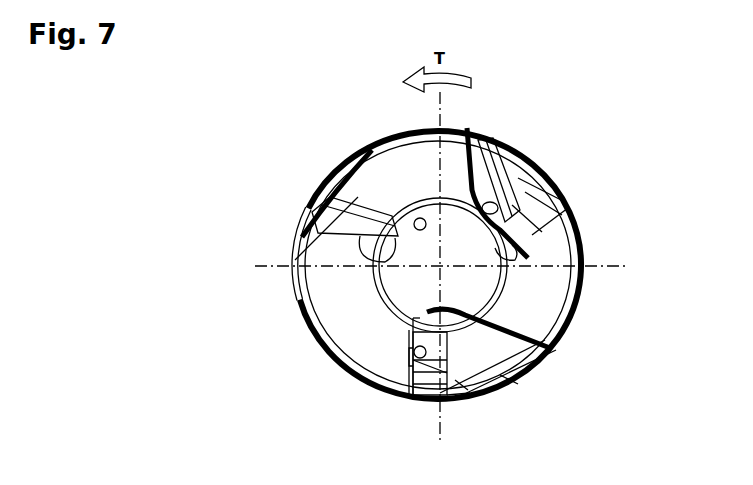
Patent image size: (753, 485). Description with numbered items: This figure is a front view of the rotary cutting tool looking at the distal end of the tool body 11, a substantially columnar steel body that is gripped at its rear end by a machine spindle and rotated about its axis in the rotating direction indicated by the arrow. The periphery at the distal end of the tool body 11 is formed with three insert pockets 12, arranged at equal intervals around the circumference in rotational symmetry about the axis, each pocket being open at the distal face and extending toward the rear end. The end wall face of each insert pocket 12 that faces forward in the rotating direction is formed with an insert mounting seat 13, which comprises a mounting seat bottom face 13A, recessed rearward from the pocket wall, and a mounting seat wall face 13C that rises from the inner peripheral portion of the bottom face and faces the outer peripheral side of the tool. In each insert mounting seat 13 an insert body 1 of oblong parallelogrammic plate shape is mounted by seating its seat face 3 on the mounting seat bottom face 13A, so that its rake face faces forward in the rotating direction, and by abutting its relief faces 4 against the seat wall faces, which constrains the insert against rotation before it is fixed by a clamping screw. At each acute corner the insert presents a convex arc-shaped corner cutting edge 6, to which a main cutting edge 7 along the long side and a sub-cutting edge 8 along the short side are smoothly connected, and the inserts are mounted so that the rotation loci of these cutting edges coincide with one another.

The insert body 1 is at (288, 196).
The seat face 3 is at (374, 388).
The relief face 4 is at (420, 418).
The corner cutting edge 6 is at (473, 395).
The main cutting edge 7 is at (465, 398).
The sub-cutting edge 8 is at (503, 383).
The tool body 11 is at (343, 133).
The insert pocket 12 is at (494, 162).
The insert mounting seat 13 is at (370, 186).
The mounting seat bottom face 13A is at (404, 356).
The mounting seat wall face 13C is at (412, 317).